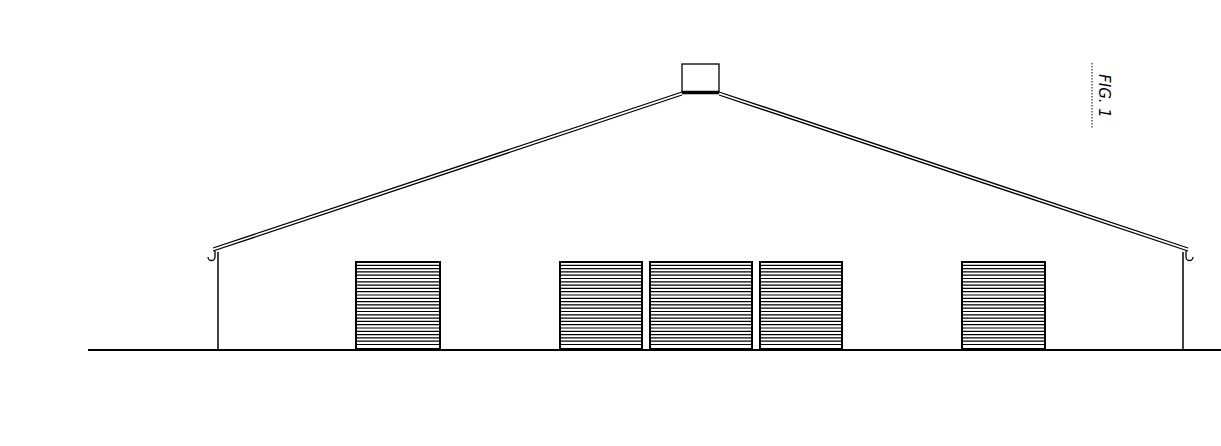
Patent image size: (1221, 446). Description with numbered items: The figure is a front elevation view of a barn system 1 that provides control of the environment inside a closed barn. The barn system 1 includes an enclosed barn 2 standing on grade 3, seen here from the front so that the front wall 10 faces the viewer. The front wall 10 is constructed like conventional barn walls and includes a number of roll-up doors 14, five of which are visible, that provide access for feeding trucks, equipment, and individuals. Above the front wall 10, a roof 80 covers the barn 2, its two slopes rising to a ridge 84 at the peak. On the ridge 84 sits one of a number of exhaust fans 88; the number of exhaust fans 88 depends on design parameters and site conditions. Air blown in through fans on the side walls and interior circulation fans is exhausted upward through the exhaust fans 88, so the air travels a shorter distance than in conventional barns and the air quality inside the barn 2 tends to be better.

The barn system 1 is at (280, 118).
The enclosed barn 2 is at (228, 237).
The grade 3 is at (168, 350).
The front wall 10 is at (490, 332).
The roll-up doors 14 is at (389, 330).
The roof 80 is at (433, 173).
The ridge 84 is at (691, 96).
The exhaust fans 88 is at (713, 82).